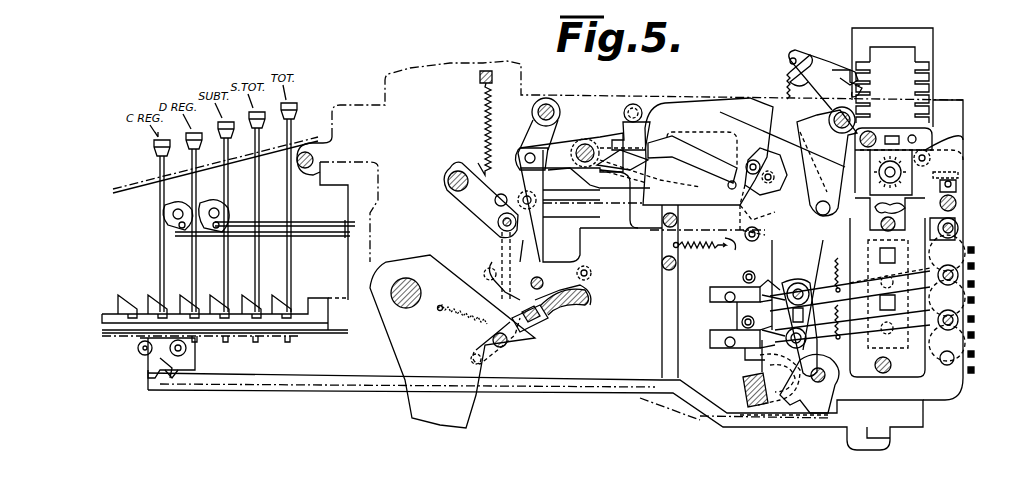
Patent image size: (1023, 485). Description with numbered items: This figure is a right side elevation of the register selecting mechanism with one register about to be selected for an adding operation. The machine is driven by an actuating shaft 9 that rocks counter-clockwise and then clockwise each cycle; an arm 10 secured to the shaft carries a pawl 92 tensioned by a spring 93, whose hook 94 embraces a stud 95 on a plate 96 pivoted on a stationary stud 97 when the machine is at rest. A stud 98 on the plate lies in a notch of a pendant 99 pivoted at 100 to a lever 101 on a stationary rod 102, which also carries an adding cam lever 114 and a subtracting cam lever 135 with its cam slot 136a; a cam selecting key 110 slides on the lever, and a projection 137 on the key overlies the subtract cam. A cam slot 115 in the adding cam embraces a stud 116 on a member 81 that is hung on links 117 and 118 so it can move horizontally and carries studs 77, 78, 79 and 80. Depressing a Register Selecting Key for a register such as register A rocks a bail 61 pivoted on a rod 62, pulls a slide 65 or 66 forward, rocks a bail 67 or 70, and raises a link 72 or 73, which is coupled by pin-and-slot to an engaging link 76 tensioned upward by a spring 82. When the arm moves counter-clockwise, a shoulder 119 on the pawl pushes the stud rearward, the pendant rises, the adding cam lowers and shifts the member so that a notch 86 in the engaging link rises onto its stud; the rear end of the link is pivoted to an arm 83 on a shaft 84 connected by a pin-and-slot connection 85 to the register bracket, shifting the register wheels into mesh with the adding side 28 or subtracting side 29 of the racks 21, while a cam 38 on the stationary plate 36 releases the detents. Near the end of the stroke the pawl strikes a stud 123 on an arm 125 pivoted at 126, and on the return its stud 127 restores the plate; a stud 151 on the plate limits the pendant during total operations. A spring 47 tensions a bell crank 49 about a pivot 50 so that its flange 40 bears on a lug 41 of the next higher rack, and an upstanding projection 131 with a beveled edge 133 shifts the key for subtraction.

The actuating shaft 9 is at (407, 280).
The arm 10 is at (405, 365).
The register actuating rack 21 is at (890, 30).
The adding side 28 is at (866, 66).
The subtracting side 29 is at (932, 74).
The stationary plate 36 is at (896, 372).
The cam 38 is at (872, 203).
The flange 40 is at (842, 70).
The lug 41 is at (858, 83).
The spring 47 is at (784, 72).
The bell crank 49 is at (825, 60).
The pivot 50 is at (832, 100).
The bail 61 is at (140, 348).
The rod 62 is at (172, 318).
The slide 65 is at (148, 374).
The slide 66 is at (175, 380).
The bail 67 is at (768, 405).
The bail 70 is at (757, 366).
The link 72 is at (810, 354).
The link 73 is at (805, 290).
The engaging link 76 is at (700, 344).
The stud 77 is at (741, 322).
The stud 78 is at (741, 276).
The stud 79 is at (754, 243).
The stud 80 is at (748, 170).
The member 81 is at (607, 226).
The spring 82 is at (836, 260).
The arm 83 is at (966, 232).
The shaft 84 is at (966, 262).
The pin-and-slot connection 85 is at (961, 185).
The notch 86 is at (771, 315).
The pawl 92 is at (510, 305).
The spring 93 is at (452, 332).
The hook 94 is at (548, 308).
The stud 95 is at (535, 322).
The plate 96 is at (505, 254).
The stationary stud 97 is at (535, 280).
The stud 98 is at (586, 272).
The pendant 99 is at (540, 241).
The pivot 100 is at (530, 156).
The lever 101 is at (566, 168).
The stationary rod 102 is at (584, 140).
The cam selecting key 110 is at (610, 140).
The adding cam lever 114 is at (698, 104).
The cam slot 115 is at (768, 150).
The stud 116 is at (768, 182).
The link 117 is at (533, 128).
The link 118 is at (820, 170).
The shoulder 119 is at (507, 342).
The stud 123 is at (502, 193).
The arm 125 is at (468, 216).
The pivot 126 is at (447, 181).
The stud 127 is at (496, 226).
The upstanding projection 131 is at (660, 330).
The beveled edge 133 is at (602, 178).
The subtracting cam lever 135 is at (700, 166).
The cam slot 136a is at (797, 308).
The projection 137 is at (690, 244).
The stud 151 is at (480, 272).
The register A is at (895, 129).